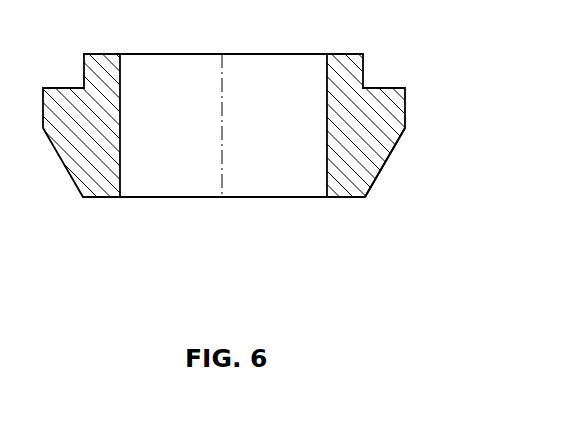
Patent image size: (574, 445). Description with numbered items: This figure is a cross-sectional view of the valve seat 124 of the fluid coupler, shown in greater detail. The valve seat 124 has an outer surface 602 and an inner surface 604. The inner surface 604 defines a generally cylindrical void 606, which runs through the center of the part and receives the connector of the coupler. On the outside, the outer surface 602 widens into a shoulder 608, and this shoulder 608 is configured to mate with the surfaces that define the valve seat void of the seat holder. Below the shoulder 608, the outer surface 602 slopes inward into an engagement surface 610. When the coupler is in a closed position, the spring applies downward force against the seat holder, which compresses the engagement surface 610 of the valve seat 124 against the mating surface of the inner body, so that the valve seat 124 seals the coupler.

The valve seat 124 is at (287, 150).
The outer surface 602 is at (407, 97).
The inner surface 604 is at (121, 165).
The generally cylindrical void 606 is at (287, 187).
The shoulder 608 is at (393, 123).
The engagement surface 610 is at (385, 163).